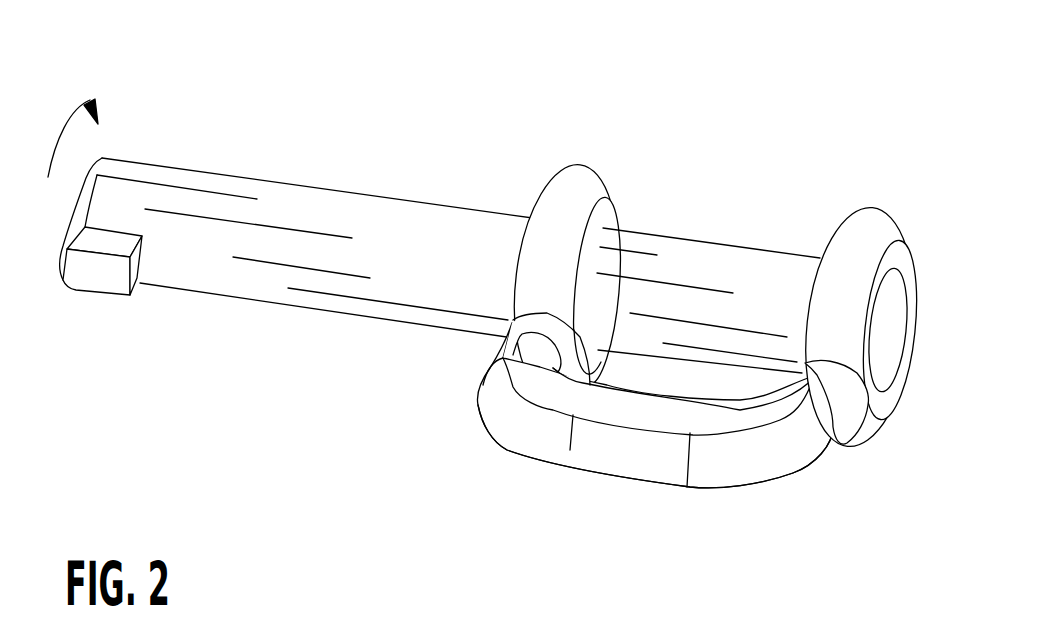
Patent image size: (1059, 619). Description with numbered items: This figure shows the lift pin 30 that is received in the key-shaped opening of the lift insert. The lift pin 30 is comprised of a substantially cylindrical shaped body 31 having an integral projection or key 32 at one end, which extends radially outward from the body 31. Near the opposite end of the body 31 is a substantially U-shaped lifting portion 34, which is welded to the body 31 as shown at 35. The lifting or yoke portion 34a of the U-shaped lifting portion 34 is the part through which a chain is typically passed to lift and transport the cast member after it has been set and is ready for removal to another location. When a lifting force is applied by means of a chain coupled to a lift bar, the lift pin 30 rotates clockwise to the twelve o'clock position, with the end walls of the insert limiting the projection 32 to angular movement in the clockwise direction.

The lift pin 30 is at (764, 118).
The body 31 is at (307, 188).
The projection or key 32 is at (97, 284).
The lifting portion 34 is at (675, 382).
The yoke portion 34a is at (557, 443).
The weld 35 is at (522, 267).